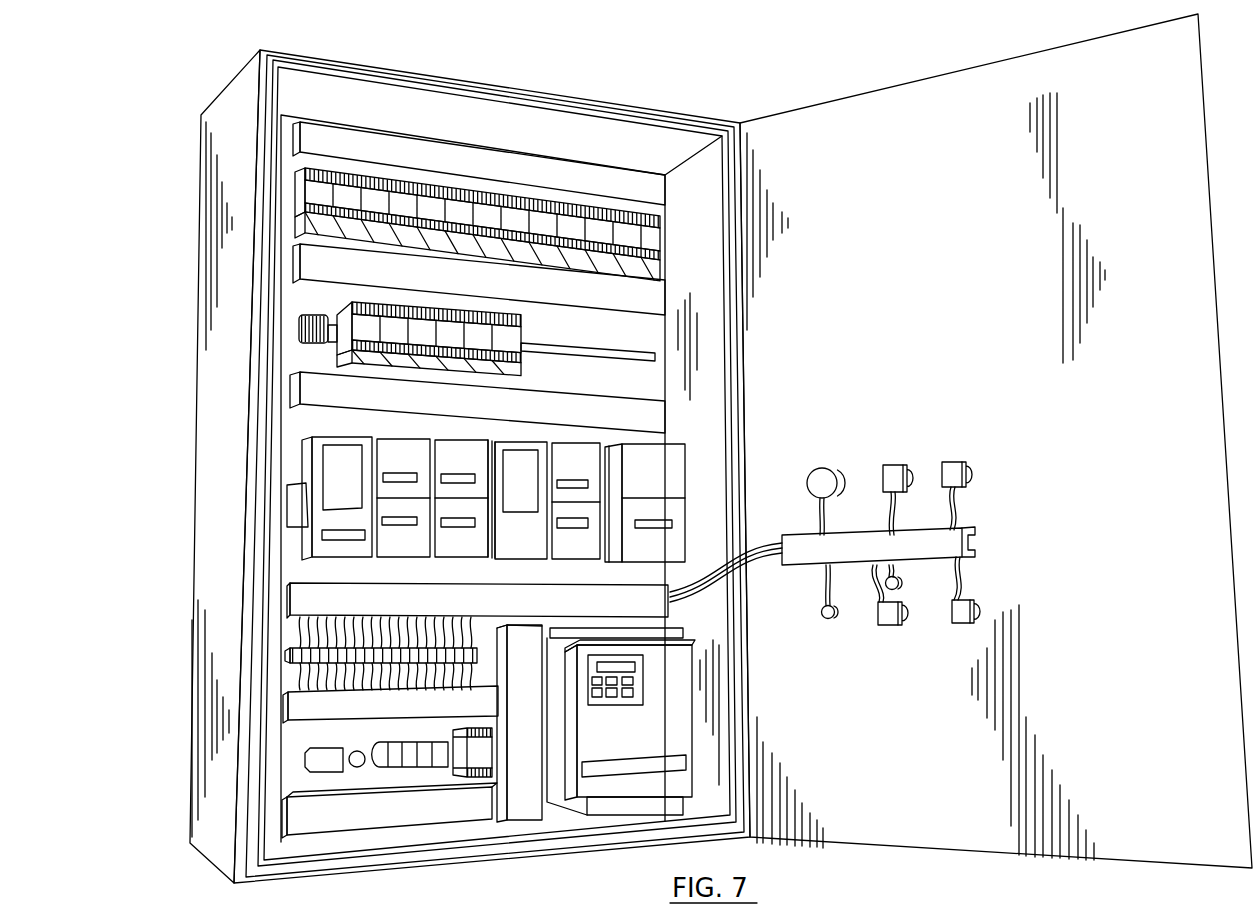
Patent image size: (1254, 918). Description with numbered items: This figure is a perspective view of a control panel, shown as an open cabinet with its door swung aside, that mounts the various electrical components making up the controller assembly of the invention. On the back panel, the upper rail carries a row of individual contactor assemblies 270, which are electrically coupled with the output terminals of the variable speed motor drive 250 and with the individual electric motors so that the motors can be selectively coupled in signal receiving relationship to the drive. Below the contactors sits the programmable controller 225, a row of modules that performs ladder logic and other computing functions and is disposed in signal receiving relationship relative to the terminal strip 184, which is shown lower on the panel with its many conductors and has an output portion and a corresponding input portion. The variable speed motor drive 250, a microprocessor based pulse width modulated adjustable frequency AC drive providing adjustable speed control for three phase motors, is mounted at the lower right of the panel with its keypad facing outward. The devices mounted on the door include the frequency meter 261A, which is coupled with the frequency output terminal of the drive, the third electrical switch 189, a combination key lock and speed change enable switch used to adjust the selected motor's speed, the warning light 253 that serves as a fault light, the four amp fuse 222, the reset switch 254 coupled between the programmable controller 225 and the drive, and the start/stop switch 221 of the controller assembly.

The contactor assemblies 270 is at (635, 230).
The programmable controller 225 is at (660, 472).
The frequency meter 261A is at (818, 460).
The third electrical switch 189 is at (944, 458).
The warning light 253 is at (920, 581).
The fuse 222 is at (819, 622).
The reset switch 254 is at (883, 631).
The start/stop switch 221 is at (981, 619).
The variable speed motor drive 250 is at (672, 714).
The terminal strip 184 is at (286, 661).